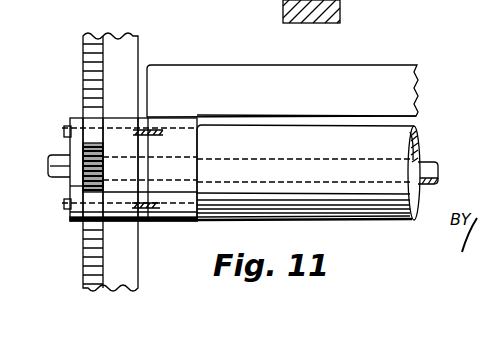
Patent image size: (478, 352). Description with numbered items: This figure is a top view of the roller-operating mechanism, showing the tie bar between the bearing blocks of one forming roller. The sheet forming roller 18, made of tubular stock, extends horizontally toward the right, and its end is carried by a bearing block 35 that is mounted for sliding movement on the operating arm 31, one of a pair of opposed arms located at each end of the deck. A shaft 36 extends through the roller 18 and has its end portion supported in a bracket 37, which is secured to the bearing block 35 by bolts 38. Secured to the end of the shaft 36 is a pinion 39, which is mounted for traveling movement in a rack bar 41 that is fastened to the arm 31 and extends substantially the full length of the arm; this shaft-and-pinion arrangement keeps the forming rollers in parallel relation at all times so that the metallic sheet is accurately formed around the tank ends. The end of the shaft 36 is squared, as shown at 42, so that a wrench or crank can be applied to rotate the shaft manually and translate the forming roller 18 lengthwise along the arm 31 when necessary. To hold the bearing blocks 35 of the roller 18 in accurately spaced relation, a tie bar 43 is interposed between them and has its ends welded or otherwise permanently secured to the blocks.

The sheet forming roller 18 is at (348, 210).
The operating arm 31 is at (118, 47).
The bearing block 35 is at (172, 221).
The shaft 36 is at (430, 164).
The bracket 37 is at (70, 186).
The bolt 38 is at (64, 130).
The pinion 39 is at (85, 155).
The rack bar 41 is at (84, 40).
The squared end 42 is at (49, 161).
The tie bar 43 is at (400, 98).